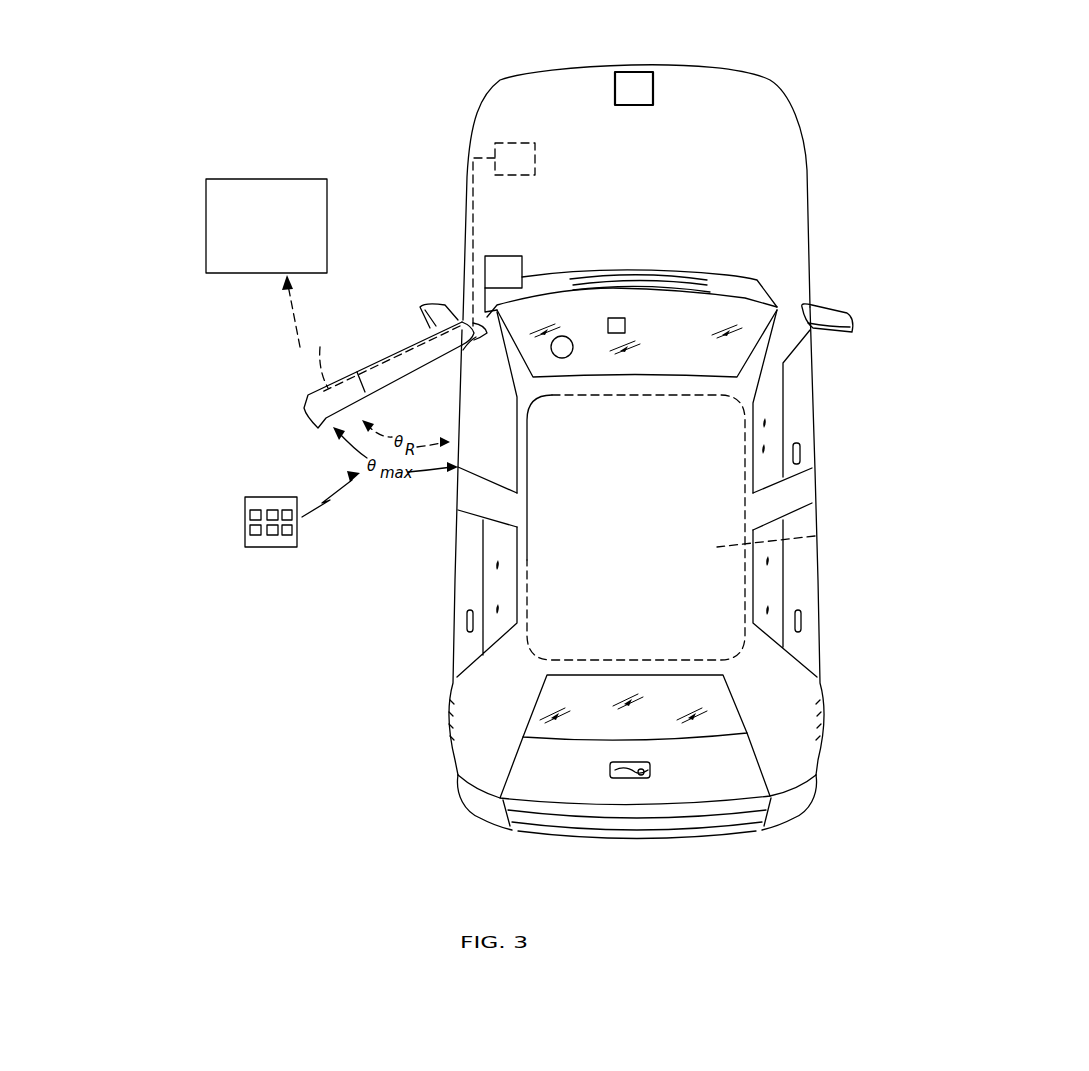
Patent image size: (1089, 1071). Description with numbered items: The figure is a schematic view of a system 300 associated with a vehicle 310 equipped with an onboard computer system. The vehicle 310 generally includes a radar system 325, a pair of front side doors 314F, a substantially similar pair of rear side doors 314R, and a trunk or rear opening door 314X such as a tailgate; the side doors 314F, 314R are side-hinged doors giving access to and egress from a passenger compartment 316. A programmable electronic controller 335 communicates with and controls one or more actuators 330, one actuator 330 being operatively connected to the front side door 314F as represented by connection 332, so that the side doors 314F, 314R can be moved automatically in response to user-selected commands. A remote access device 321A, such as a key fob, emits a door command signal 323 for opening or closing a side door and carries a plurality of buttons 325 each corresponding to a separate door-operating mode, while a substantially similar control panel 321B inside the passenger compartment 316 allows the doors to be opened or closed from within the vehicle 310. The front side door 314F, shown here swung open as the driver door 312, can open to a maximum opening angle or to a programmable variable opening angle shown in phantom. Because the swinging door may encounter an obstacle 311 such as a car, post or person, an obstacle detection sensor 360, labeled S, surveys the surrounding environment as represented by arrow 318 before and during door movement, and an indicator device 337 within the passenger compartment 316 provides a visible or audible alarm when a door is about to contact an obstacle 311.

The system 300 is at (988, 70).
The vehicle 310 is at (847, 238).
The obstacle 311 is at (245, 179).
The driver front door (open) 312 is at (352, 410).
The front side door 314F is at (797, 428).
The rear side door 314R is at (465, 577).
The rear opening door 314X is at (530, 788).
The passenger compartment 316 is at (815, 536).
The arrow 318 is at (300, 342).
The remote access device 321A is at (297, 523).
The control panel 321B is at (625, 325).
The door command signal 323 is at (334, 490).
The radar system 325 is at (653, 73).
The actuator 330 is at (510, 256).
The connection 332 is at (558, 302).
The controller 335 is at (527, 143).
The indicator device 337 is at (575, 336).
The obstacle detection sensor 360 is at (328, 355).